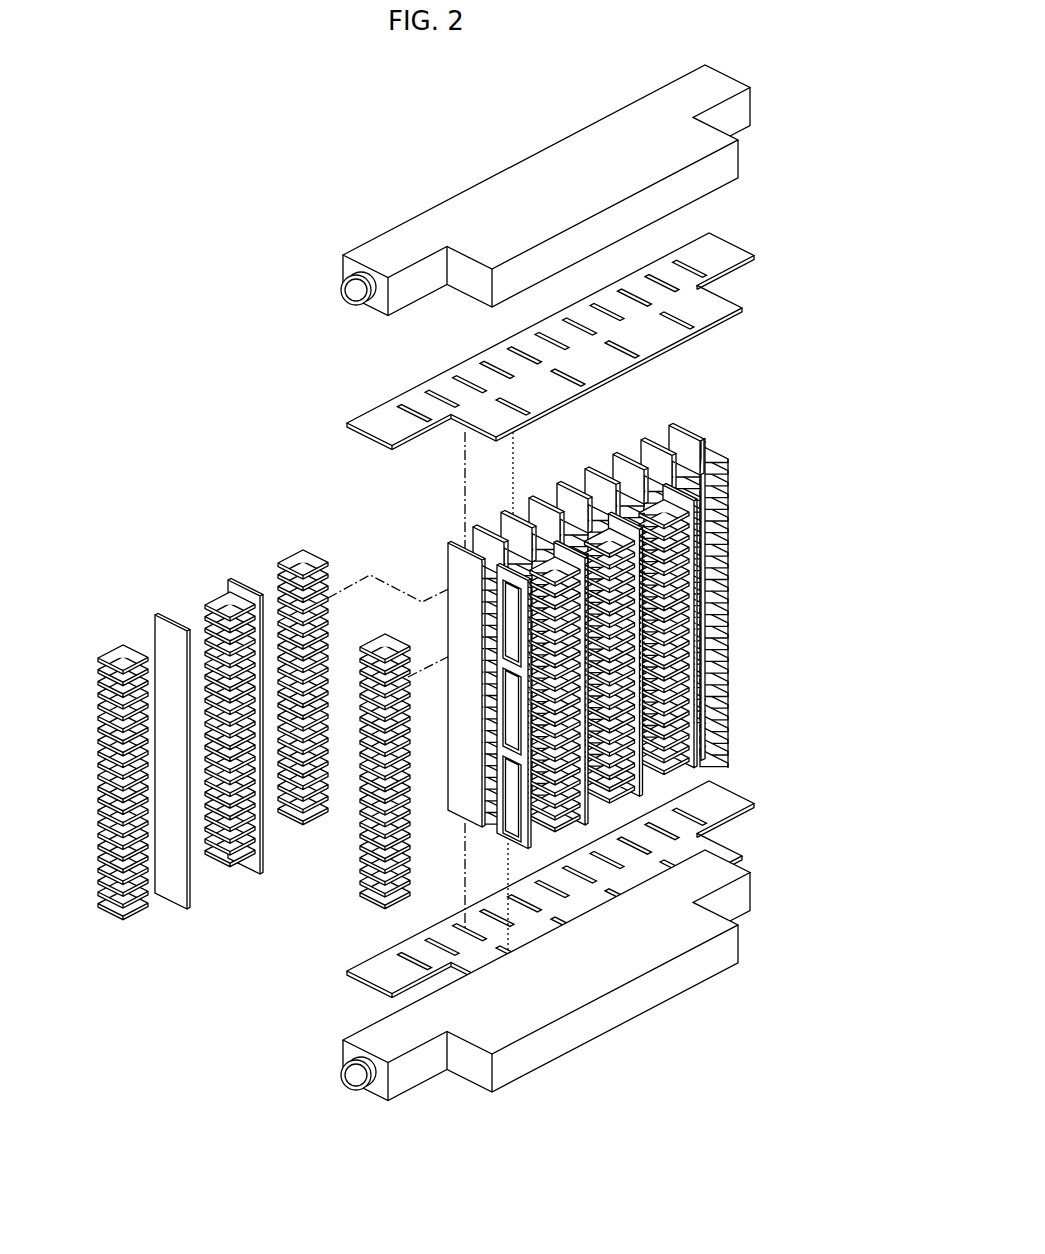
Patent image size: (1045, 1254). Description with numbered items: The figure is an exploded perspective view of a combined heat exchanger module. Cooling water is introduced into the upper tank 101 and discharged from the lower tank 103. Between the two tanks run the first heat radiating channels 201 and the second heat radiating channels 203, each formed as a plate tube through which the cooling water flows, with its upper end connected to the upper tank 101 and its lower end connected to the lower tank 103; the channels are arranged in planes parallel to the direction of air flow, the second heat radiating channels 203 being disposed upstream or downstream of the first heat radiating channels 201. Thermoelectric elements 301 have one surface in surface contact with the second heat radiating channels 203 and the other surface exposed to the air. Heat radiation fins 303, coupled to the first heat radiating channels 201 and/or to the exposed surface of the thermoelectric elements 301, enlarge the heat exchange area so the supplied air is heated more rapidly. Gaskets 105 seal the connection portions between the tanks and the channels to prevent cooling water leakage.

The upper tank 101 is at (457, 203).
The lower tank 103 is at (548, 1002).
The gaskets 105 is at (372, 422).
The first heat radiating channels 201 is at (160, 632).
The second heat radiating channels 203 is at (631, 728).
The thermoelectric elements 301 is at (514, 822).
The heat radiation fins 303 is at (113, 915).